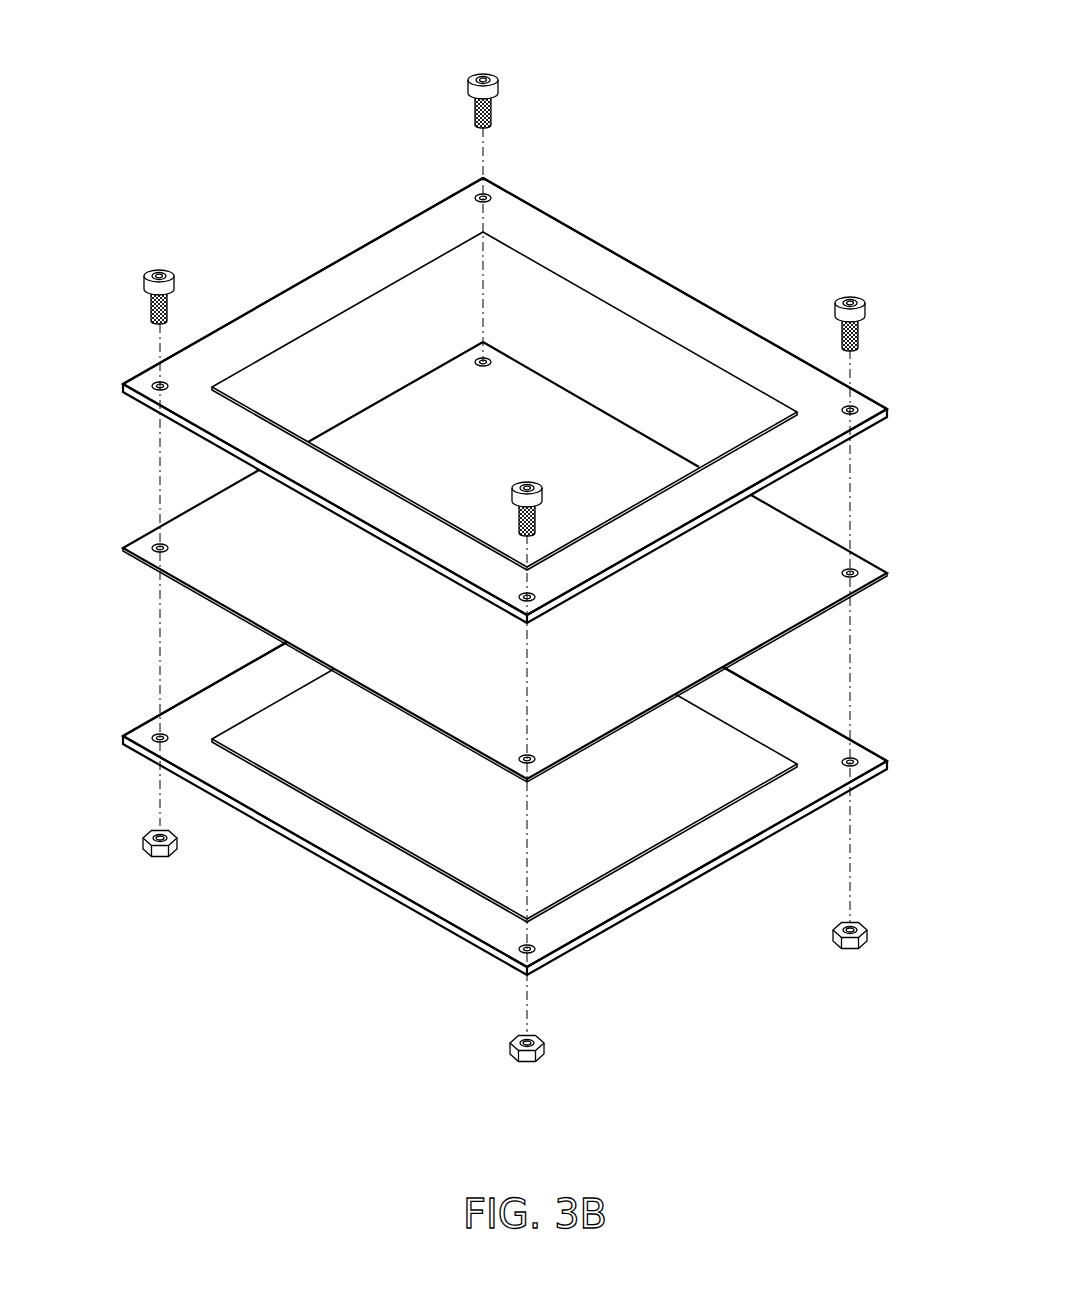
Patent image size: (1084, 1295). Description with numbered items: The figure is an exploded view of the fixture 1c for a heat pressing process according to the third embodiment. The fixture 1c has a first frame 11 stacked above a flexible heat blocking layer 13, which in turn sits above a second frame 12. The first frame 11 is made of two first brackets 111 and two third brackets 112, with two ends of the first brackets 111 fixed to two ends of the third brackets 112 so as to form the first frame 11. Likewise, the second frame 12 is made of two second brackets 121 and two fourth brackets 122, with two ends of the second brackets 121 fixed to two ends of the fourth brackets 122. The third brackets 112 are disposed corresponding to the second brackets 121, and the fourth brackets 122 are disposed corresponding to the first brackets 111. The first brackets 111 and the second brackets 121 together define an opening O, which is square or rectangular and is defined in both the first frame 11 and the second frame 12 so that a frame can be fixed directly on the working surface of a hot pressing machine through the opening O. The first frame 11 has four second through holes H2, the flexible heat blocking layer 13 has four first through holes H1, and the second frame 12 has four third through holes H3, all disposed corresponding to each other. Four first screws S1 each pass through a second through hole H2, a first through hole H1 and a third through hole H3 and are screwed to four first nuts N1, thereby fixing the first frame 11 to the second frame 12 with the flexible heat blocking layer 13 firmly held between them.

The fixture 1c is at (247, 95).
The first frame 11 is at (497, 387).
The first brackets 111 is at (640, 290).
The third brackets 112 is at (368, 270).
The second frame 12 is at (497, 802).
The second brackets 121 is at (262, 683).
The fourth brackets 122 is at (752, 700).
The flexible heat blocking layer 13 is at (496, 564).
The opening O is at (540, 305).
The first through hole H1 is at (152, 547).
The second through hole H2 is at (490, 196).
The third through hole H3 is at (152, 733).
The first screw S1 is at (488, 72).
The first nut N1 is at (155, 860).